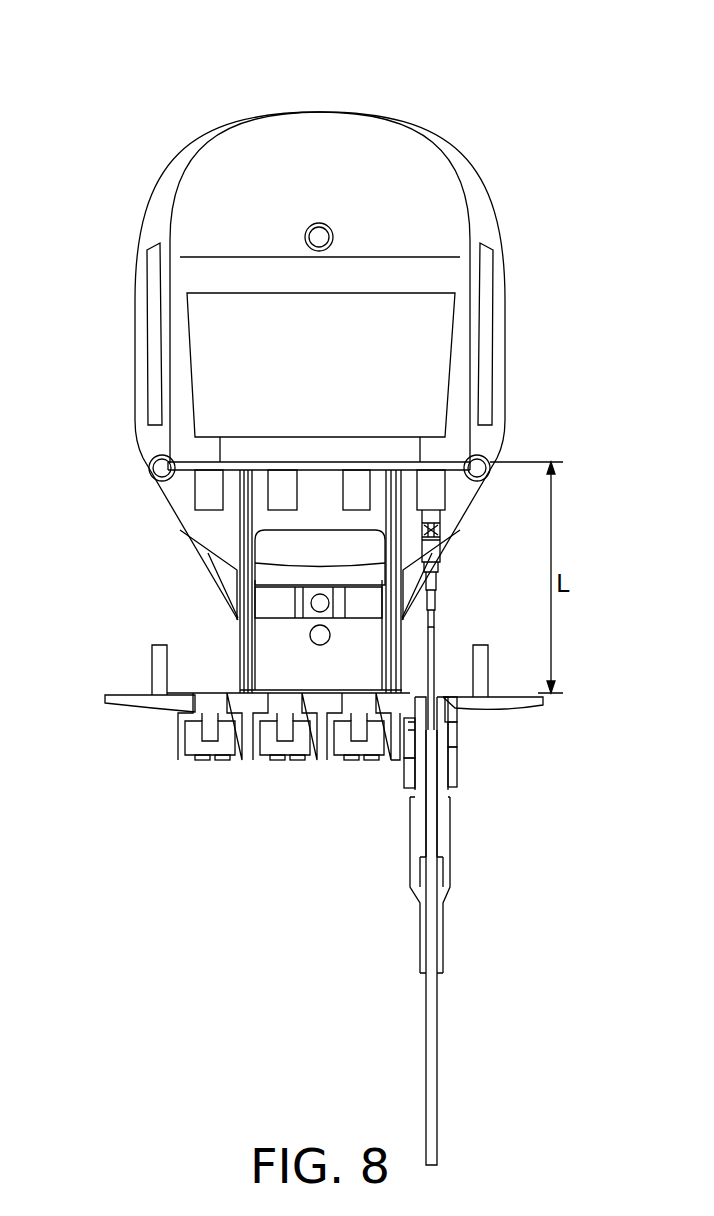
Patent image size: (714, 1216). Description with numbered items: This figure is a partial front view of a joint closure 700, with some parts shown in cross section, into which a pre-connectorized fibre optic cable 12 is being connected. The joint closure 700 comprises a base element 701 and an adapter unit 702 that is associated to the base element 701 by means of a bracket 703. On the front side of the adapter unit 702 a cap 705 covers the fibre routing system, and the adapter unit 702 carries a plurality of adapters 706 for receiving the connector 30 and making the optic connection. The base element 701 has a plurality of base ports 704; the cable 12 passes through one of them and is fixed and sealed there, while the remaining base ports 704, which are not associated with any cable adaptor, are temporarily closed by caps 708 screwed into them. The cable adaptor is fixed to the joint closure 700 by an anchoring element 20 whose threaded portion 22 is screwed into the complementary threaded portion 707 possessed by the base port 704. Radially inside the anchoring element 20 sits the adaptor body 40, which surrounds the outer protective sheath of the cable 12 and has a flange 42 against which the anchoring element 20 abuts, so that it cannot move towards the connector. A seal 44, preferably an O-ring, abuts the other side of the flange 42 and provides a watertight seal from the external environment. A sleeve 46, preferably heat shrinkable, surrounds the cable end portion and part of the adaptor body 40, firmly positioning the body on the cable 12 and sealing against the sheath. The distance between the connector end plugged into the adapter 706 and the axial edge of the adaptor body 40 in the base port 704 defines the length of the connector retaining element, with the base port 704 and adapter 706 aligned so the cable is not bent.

The joint closure 700 is at (524, 154).
The adapter unit 702 is at (104, 274).
The cap 705 is at (318, 128).
The adapters 706 is at (200, 488).
The connector 30 is at (438, 497).
The bracket 703 is at (275, 655).
The base element 701 is at (104, 724).
The base ports 704 is at (177, 720).
The caps 708 is at (202, 752).
The threaded portion 22 is at (407, 755).
The anchoring element 20 is at (407, 788).
The seal 44 is at (452, 724).
The flange 42 is at (457, 740).
The complementary threaded portion 707 is at (460, 755).
The adaptor body 40 is at (442, 833).
The sleeve 46 is at (442, 890).
The fibre optic cable 12 is at (437, 1122).